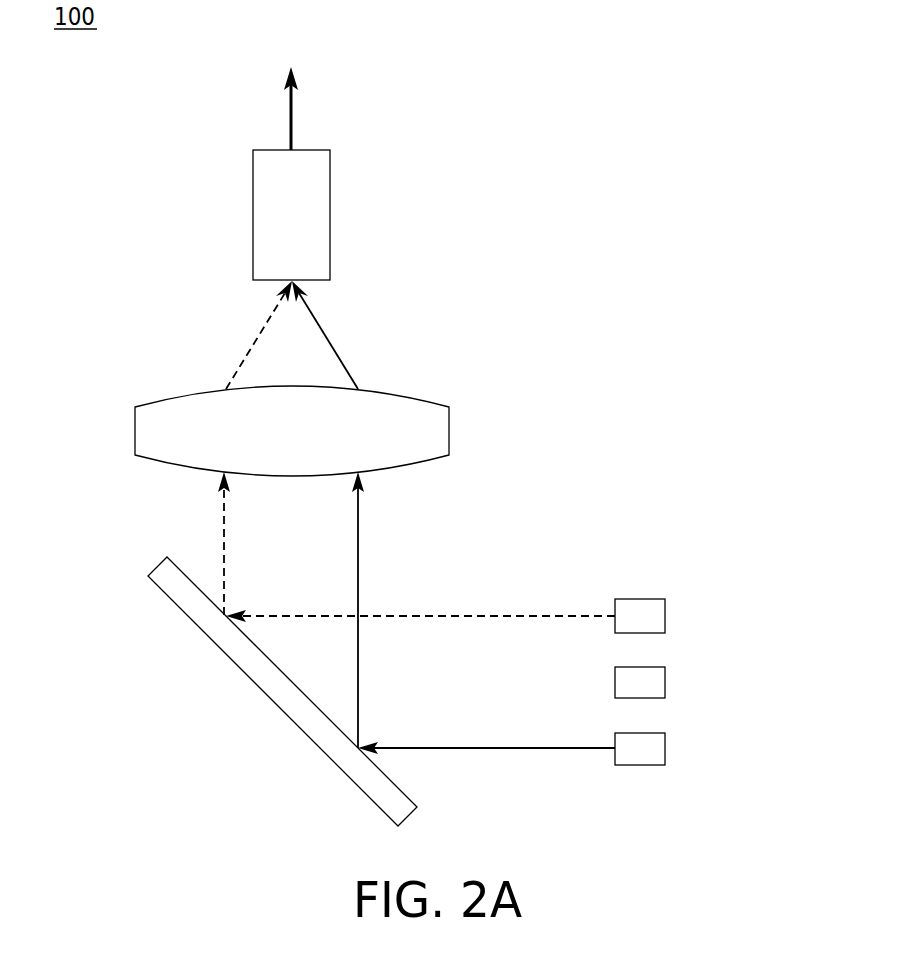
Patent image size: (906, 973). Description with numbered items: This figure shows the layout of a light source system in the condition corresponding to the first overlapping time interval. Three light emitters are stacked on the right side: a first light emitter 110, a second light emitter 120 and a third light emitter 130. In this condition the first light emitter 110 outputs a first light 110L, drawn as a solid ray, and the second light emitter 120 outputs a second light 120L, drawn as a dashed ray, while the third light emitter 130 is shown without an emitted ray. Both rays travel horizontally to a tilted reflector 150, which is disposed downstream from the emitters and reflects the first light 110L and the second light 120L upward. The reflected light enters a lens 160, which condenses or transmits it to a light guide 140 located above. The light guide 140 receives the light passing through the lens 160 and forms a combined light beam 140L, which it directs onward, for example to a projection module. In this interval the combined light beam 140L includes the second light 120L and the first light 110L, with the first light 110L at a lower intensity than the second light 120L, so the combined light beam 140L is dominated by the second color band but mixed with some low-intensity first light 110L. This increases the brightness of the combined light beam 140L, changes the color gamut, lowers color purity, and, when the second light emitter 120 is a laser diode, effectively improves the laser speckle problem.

The first light emitter 110 is at (665, 749).
The first light 110L is at (530, 748).
The second light emitter 120 is at (665, 616).
The second light 120L is at (532, 616).
The third light emitter 130 is at (665, 683).
The light guide 140 is at (253, 213).
The combined light beam 140L is at (293, 108).
The reflector 150 is at (273, 700).
The lens 160 is at (449, 430).